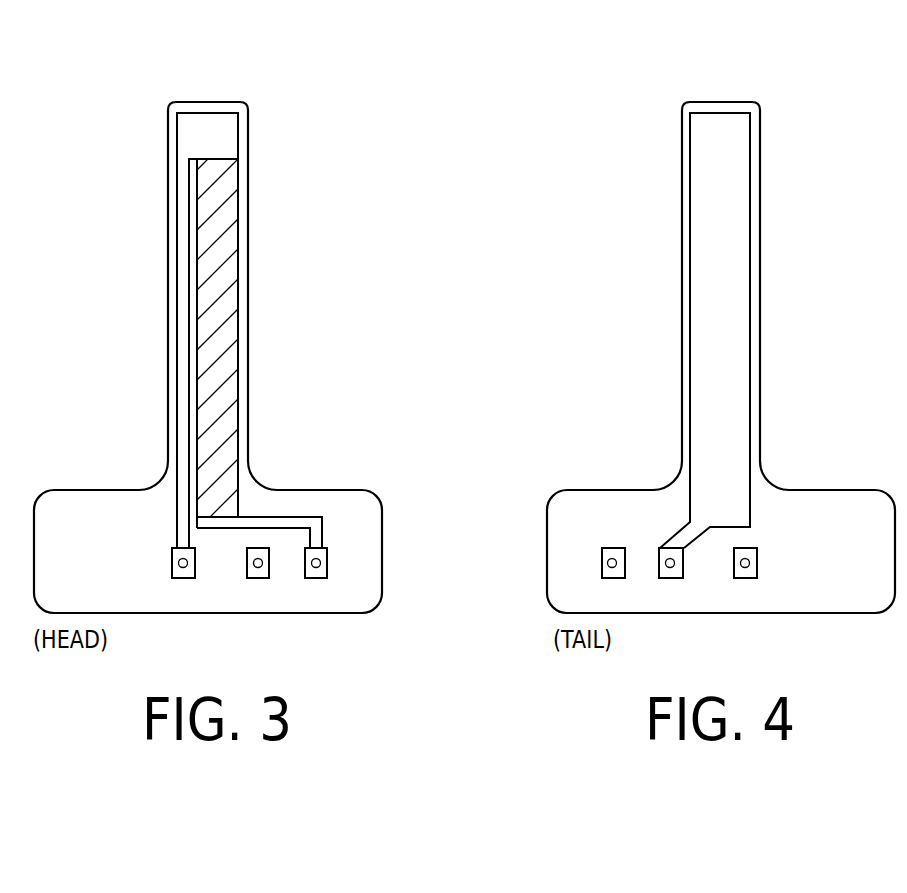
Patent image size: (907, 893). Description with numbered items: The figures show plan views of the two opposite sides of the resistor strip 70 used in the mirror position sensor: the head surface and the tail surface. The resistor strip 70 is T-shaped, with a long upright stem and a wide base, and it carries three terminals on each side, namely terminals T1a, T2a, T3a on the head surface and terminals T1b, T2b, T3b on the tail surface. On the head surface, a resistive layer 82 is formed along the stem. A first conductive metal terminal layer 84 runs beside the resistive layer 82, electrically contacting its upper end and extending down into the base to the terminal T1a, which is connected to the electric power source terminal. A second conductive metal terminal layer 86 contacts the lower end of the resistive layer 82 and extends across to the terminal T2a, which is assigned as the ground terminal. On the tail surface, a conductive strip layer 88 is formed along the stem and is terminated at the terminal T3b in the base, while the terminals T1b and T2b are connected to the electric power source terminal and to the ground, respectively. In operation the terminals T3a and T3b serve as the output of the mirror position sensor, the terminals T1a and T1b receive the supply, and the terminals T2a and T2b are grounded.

In FIG. 3, the resistor strip 70 is at (259, 72).
In FIG. 4, the resistor strip 70 is at (769, 72).
In FIG. 3, the resistive layer 82 is at (225, 220).
In FIG. 3, the first conductive metal terminal layer 84 is at (183, 248).
In FIG. 3, the second conductive metal terminal layer 86 is at (278, 522).
In FIG. 4, the conductive strip layer 88 is at (735, 213).
In FIG. 3, the terminal T1a is at (179, 563).
In FIG. 3, the terminal T2a is at (319, 564).
In FIG. 3, the terminal T3a is at (256, 564).
In FIG. 4, the terminal T1b is at (749, 565).
In FIG. 4, the terminal T2b is at (607, 563).
In FIG. 4, the terminal T3b is at (674, 565).